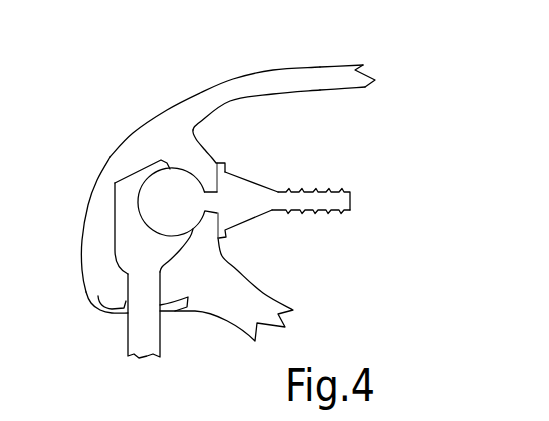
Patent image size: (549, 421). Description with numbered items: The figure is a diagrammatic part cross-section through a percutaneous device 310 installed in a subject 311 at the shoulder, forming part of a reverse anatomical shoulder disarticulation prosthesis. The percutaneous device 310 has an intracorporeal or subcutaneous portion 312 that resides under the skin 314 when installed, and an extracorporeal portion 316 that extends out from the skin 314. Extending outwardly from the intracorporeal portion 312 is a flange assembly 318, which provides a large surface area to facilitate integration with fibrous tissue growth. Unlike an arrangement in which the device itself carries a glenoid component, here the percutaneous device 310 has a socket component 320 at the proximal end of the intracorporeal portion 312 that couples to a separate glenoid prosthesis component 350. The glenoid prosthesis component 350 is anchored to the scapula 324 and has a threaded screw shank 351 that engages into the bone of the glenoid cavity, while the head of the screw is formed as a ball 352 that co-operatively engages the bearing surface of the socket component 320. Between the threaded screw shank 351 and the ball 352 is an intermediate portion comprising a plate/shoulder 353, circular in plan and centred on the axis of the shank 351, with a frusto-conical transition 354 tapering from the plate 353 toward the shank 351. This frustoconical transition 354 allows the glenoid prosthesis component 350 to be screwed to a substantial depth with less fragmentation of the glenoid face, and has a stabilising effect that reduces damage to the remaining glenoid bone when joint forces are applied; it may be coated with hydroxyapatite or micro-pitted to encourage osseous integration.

The percutaneous device 310 is at (159, 264).
The subject 311 is at (250, 71).
The intracorporeal portion 312 is at (140, 285).
The skin 314 is at (84, 298).
The extracorporeal portion 316 is at (134, 338).
The flange assembly 318 is at (108, 308).
The socket component 320 is at (130, 198).
The scapula 324 is at (278, 105).
The glenoid prosthesis component 350 is at (302, 192).
The threaded screw shank 351 is at (318, 206).
The ball 352 is at (183, 178).
The plate/shoulder 353 is at (221, 236).
The frusto-conical transition 354 is at (256, 191).